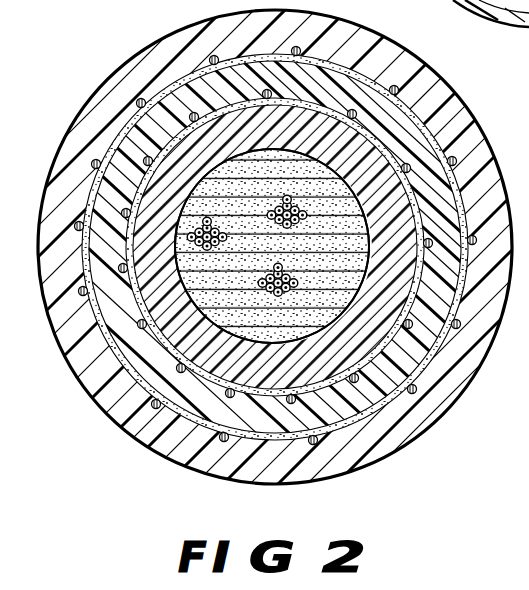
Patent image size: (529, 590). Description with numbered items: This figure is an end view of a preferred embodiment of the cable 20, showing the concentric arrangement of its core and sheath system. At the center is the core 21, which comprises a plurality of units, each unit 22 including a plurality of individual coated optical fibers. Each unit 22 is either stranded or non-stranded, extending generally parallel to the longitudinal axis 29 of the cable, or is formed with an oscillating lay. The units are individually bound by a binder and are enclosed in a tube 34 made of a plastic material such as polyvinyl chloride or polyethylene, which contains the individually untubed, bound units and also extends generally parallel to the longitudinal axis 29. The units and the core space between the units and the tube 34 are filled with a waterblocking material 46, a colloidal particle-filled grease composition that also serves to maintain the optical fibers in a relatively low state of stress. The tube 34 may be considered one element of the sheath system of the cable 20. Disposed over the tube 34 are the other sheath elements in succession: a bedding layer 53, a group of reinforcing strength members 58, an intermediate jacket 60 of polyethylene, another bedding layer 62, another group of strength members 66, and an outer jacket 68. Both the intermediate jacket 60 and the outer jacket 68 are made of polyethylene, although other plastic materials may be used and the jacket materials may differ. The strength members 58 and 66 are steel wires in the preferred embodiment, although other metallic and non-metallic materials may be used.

The cable 20 is at (95, 63).
The core 21 is at (99, 399).
The unit 22 is at (222, 210).
The longitudinal axis 29 is at (291, 255).
The tube 34 is at (169, 225).
The waterblocking material 46 is at (246, 281).
The bedding layer 53 is at (148, 187).
The reinforcing strength members 58 is at (140, 322).
The intermediate jacket 60 is at (443, 299).
The bedding layer 62 is at (418, 132).
The strength members 66 is at (221, 56).
The outer jacket 68 is at (349, 31).